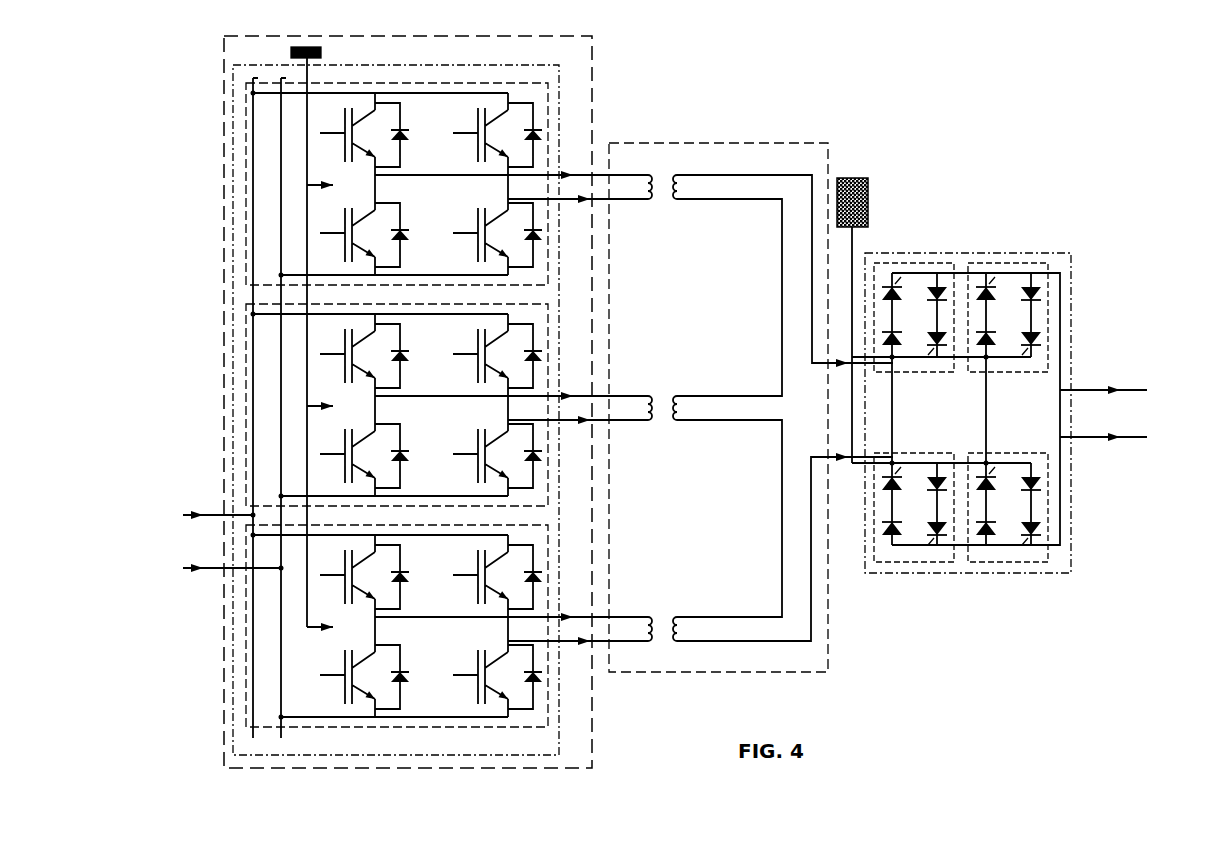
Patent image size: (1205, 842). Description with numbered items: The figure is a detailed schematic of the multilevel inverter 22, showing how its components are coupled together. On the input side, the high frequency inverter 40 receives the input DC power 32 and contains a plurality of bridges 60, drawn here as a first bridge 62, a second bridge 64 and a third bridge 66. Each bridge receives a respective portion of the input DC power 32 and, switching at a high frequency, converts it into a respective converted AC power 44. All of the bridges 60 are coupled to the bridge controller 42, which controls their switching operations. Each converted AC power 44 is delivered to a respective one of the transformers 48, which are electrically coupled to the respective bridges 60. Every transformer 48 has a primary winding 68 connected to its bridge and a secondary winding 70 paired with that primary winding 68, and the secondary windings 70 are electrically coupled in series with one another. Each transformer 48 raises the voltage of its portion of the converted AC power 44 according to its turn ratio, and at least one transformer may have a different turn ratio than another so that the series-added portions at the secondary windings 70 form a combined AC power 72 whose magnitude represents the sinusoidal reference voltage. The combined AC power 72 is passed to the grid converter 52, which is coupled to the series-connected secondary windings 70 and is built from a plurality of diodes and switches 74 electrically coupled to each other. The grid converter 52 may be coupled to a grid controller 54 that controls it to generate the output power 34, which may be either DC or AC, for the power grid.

The multilevel inverter 22 is at (1120, 105).
The input DC power 32 is at (202, 517).
The output power 34 is at (1112, 392).
The high frequency inverter 40 is at (222, 103).
The bridge controller 42 is at (322, 50).
The converted AC power 44 is at (584, 647).
The transformers 48 is at (775, 143).
The grid converter 52 is at (1050, 253).
The grid controller 54 is at (852, 178).
The bridges 60 is at (233, 190).
The first bridge 62 is at (550, 128).
The second bridge 64 is at (550, 349).
The third bridge 66 is at (550, 570).
The primary winding 68 is at (650, 617).
The secondary winding 70 is at (675, 617).
The combined AC power 72 is at (840, 368).
The diodes and switches 74 is at (1002, 456).